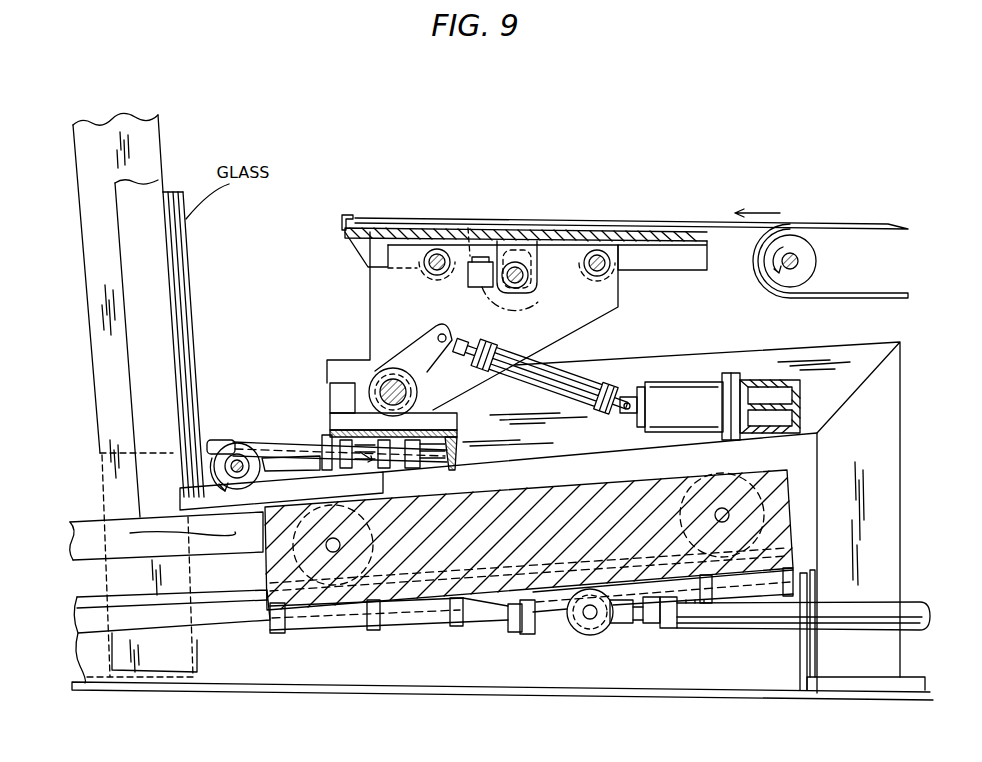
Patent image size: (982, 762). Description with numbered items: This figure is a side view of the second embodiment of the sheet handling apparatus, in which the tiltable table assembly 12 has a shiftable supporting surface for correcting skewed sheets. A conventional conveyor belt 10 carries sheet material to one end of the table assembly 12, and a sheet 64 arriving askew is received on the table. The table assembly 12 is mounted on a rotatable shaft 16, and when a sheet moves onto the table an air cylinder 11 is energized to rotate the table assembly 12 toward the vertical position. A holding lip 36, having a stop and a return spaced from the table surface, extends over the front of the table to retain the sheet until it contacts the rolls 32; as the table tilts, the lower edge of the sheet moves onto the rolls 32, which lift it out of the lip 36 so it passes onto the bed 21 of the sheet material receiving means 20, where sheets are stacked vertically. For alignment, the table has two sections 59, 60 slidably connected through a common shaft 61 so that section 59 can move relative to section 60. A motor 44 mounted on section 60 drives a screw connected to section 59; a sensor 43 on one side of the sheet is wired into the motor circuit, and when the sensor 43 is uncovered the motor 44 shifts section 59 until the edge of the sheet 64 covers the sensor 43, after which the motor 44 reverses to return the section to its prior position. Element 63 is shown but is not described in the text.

The conveyor belt 10 is at (858, 235).
The air cylinder 11 is at (577, 380).
The tiltable table assembly 12 is at (395, 231).
The rotatable shaft 16 is at (387, 388).
The sheet material receiving means 20 is at (95, 329).
The bed 21 is at (377, 475).
The rolls 32 is at (230, 440).
The holding lip 36 is at (343, 214).
The sensor 43 is at (480, 258).
The motor 44 is at (537, 305).
The table section 59 is at (533, 240).
The table section 60 is at (620, 296).
The common shaft 61 is at (437, 249).
The hidden line 63 is at (468, 228).
The sheet 64 is at (655, 228).